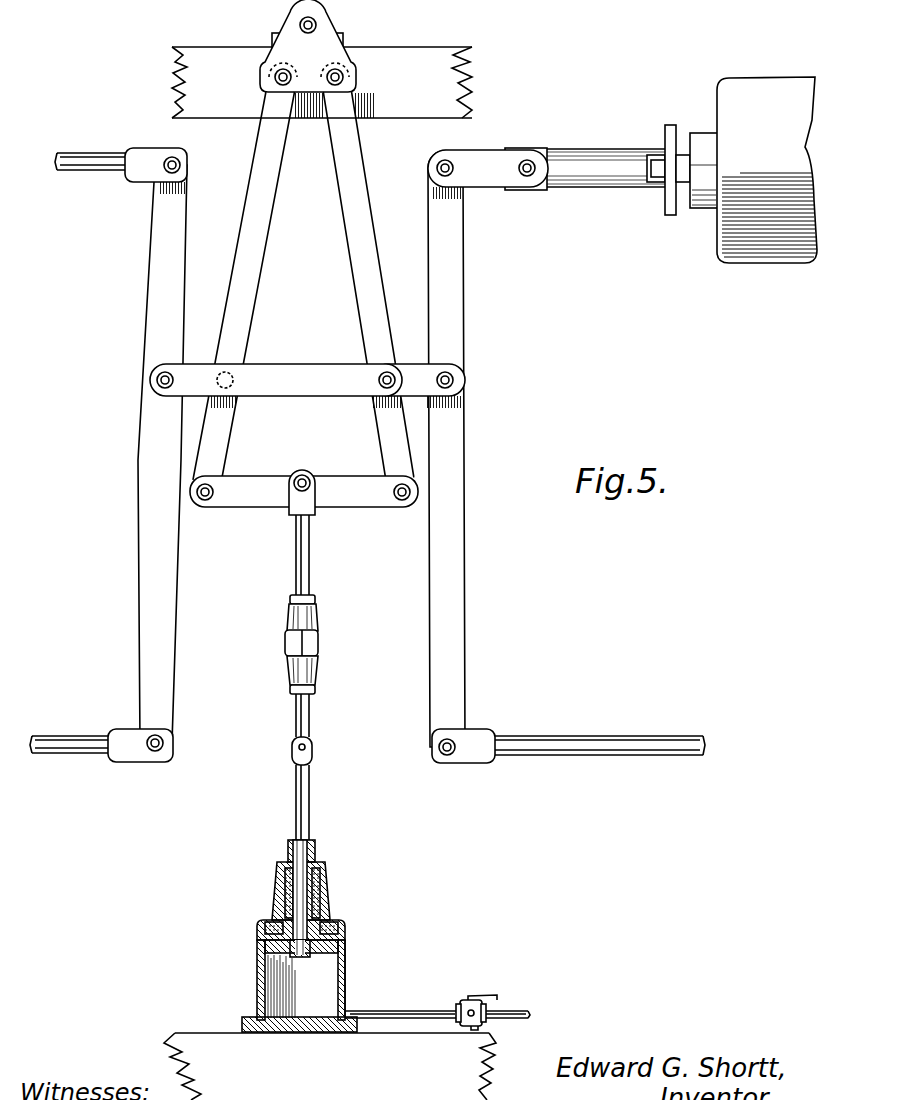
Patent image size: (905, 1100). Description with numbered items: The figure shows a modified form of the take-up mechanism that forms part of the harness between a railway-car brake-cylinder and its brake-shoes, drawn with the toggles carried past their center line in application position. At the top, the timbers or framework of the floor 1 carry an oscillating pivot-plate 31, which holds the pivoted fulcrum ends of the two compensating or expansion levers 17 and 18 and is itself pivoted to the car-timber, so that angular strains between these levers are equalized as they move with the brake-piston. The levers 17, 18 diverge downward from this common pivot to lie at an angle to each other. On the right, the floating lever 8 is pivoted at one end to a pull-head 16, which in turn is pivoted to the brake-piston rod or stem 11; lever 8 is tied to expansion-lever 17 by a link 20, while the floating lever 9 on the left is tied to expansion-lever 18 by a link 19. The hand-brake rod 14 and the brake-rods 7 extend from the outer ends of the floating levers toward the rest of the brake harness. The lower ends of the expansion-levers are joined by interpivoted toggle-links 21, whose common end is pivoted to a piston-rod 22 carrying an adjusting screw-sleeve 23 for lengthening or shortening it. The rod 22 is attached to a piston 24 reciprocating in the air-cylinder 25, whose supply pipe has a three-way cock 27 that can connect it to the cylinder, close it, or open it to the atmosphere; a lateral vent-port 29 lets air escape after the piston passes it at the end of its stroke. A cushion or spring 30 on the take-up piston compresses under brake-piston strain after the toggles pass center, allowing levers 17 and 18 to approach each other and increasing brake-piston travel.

The timbers or framework of the floor 1 is at (322, 75).
The oscillating pivot-plate 31 is at (272, 52).
The brake-rods 7 is at (50, 757).
The floating lever 8 is at (463, 595).
The floating lever 9 is at (139, 603).
The brake-piston rod or stem 11 is at (595, 186).
The hand-brake rod 14 is at (106, 176).
The pull-head 16 is at (500, 178).
The compensating lever 17 is at (241, 253).
The compensating lever 18 is at (353, 262).
The link 19 is at (300, 397).
The link 20 is at (404, 372).
The toggle-links 21 is at (240, 503).
The piston-rod 22 is at (296, 568).
The adjusting screw-sleeve 23 is at (318, 667).
The piston 24 is at (263, 943).
The air-cylinder 25 is at (257, 990).
The three-way cock 27 is at (468, 1004).
The lateral vent-port 29 is at (346, 950).
The cushion or spring 30 is at (346, 929).